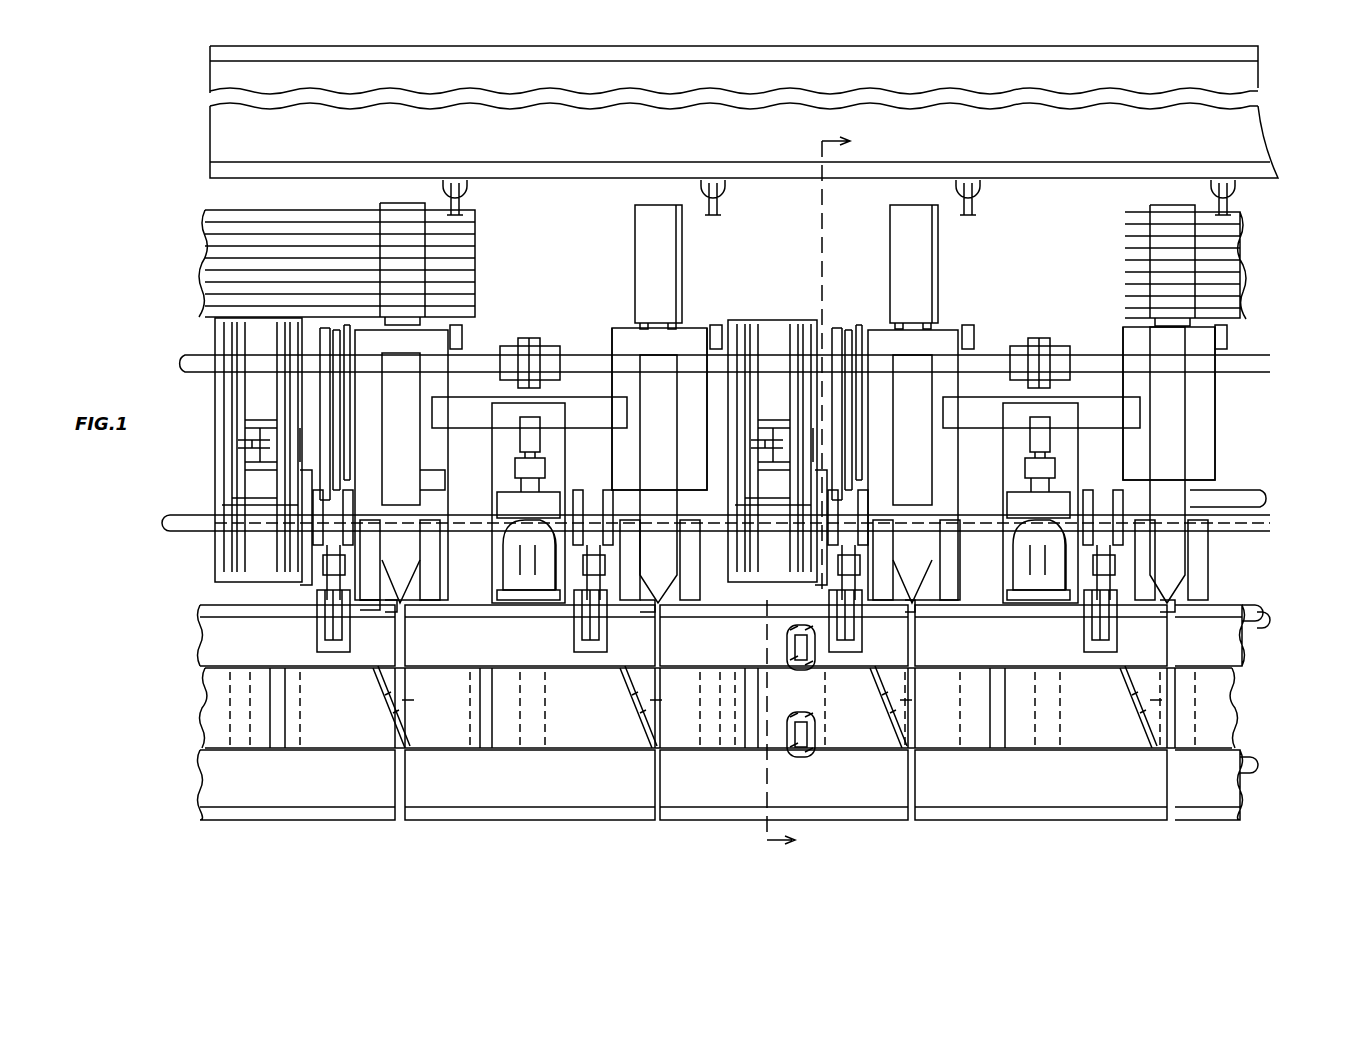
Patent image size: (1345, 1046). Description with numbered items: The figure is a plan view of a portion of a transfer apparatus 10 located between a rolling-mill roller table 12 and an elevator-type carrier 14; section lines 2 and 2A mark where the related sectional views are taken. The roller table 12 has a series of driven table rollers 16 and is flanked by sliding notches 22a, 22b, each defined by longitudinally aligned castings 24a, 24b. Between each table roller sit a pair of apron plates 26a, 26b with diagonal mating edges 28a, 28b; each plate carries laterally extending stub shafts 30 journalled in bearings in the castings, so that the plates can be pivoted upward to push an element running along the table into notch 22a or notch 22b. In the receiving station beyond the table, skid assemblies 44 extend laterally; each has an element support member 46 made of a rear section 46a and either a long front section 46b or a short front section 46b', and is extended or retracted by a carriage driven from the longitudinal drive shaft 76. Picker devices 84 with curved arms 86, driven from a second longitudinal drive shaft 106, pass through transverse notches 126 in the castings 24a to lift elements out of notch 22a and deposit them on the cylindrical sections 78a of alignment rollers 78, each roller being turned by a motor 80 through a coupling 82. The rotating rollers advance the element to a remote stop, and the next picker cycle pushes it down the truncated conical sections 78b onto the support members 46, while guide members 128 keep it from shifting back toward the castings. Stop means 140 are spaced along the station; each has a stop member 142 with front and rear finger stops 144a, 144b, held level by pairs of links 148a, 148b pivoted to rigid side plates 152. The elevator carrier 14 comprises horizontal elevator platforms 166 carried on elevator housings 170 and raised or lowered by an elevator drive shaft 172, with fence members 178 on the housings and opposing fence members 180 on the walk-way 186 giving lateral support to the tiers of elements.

The transfer apparatus 10 is at (1266, 283).
The roller table 12 is at (1024, 768).
The elevator-type carrier 14 is at (956, 272).
The table rollers 16 is at (240, 745).
The sliding notch 22a is at (1258, 664).
The sliding notch 22b is at (1254, 775).
The castings 24a is at (412, 608).
The castings 24b is at (430, 800).
The apron plate 26a is at (313, 745).
The apron plate 26b is at (445, 745).
The mating edge 28a is at (385, 706).
The mating edge 28b is at (400, 700).
The stub shafts 30 is at (795, 650).
The skid assemblies 44 is at (694, 436).
The element support member 46 is at (628, 458).
The rear section 46a is at (672, 600).
The long front section 46b is at (1234, 521).
The short front section 46b' is at (709, 506).
The drive shaft 76 is at (1235, 531).
The alignment rollers 78 is at (495, 553).
The cylindrical section 78a is at (497, 592).
The truncated conical section 78b is at (520, 530).
The motor 80 is at (540, 424).
The coupling 82 is at (512, 470).
The picker devices 84 is at (312, 567).
The curved arm 86 is at (315, 552).
The drive shaft 106 is at (1255, 628).
The transverse notches 126 is at (350, 622).
The guide members 128 is at (425, 545).
The stop means 140 is at (368, 380).
The stop member 142 is at (333, 432).
The front finger stop 144a is at (332, 325).
The rear finger stop 144b is at (344, 455).
The links 148a is at (340, 345).
The links 148b is at (340, 458).
The side plates 152 is at (330, 416).
The elevator platforms 166 is at (392, 206).
The elevator housing 170 is at (430, 440).
The elevator drive shaft 172 is at (1245, 365).
The fence members 178 is at (462, 330).
The fence members 180 is at (462, 200).
The walk-way 186 is at (1052, 151).
The section line 2 is at (806, 492).
The section line 2A is at (403, 745).